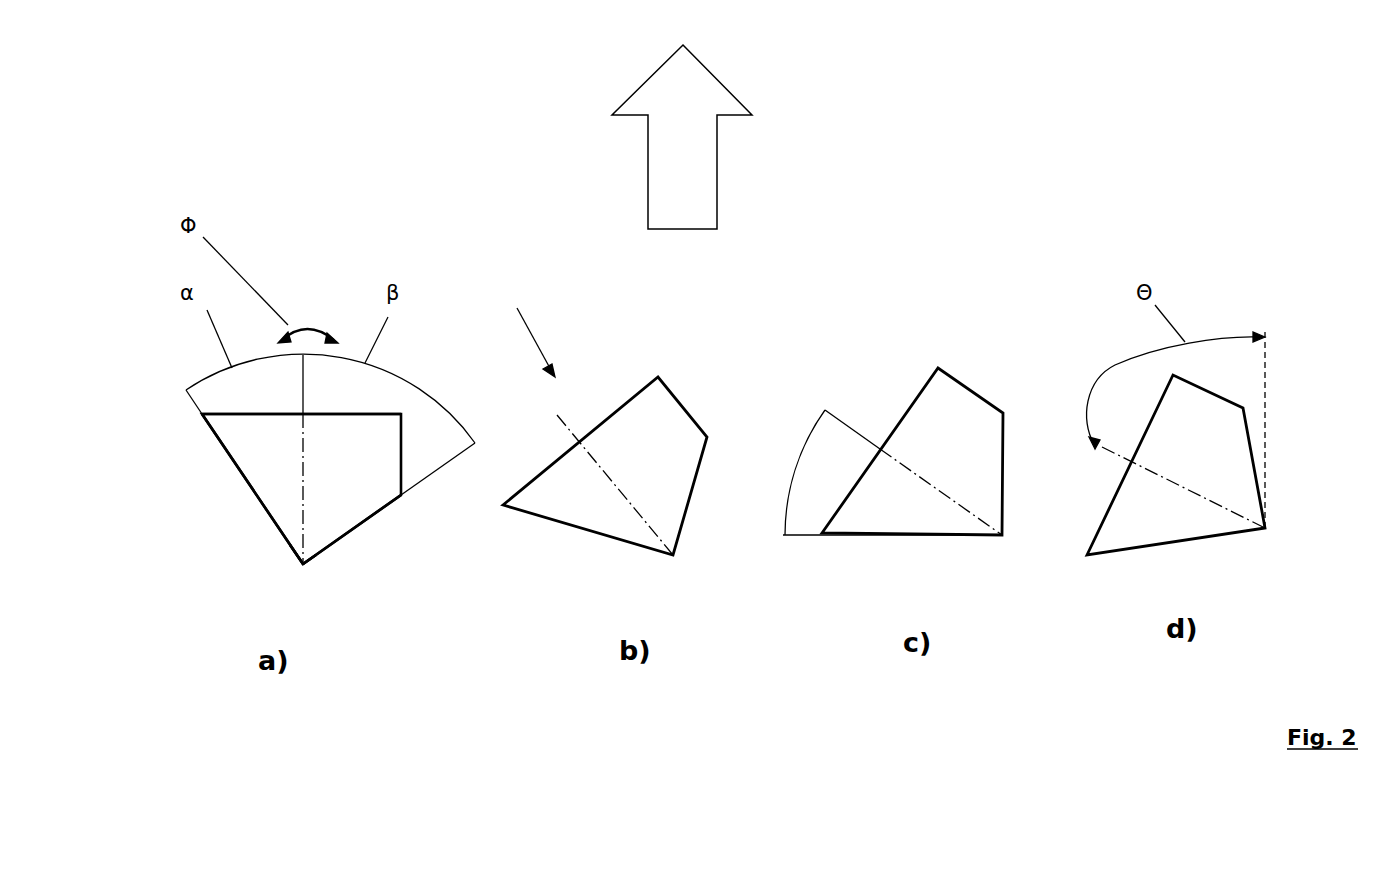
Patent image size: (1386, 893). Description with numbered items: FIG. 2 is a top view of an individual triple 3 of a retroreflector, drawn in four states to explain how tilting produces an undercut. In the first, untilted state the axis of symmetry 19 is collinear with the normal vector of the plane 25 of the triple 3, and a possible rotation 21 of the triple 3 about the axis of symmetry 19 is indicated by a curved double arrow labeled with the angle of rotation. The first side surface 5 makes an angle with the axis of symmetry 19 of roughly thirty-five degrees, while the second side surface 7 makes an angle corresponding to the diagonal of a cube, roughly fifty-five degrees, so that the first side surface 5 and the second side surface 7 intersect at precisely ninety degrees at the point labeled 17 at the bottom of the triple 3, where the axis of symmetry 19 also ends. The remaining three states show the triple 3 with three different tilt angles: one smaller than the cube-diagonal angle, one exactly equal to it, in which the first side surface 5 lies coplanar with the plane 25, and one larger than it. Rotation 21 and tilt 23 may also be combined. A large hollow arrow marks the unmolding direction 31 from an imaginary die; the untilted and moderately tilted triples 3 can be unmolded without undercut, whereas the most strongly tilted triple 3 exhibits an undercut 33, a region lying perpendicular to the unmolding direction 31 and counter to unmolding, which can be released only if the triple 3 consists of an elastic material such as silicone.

The triple 3 is at (224, 196).
The first side surface 5 is at (227, 465).
The second side surface 7 is at (352, 533).
The cutting edge / tip 17 is at (300, 563).
The axis of symmetry 19 is at (304, 367).
The rotation 21 is at (313, 318).
The tilt 23 is at (524, 328).
The plane of the triple 25 is at (368, 413).
The unmolding direction 31 is at (690, 229).
The undercut 33 is at (1258, 433).